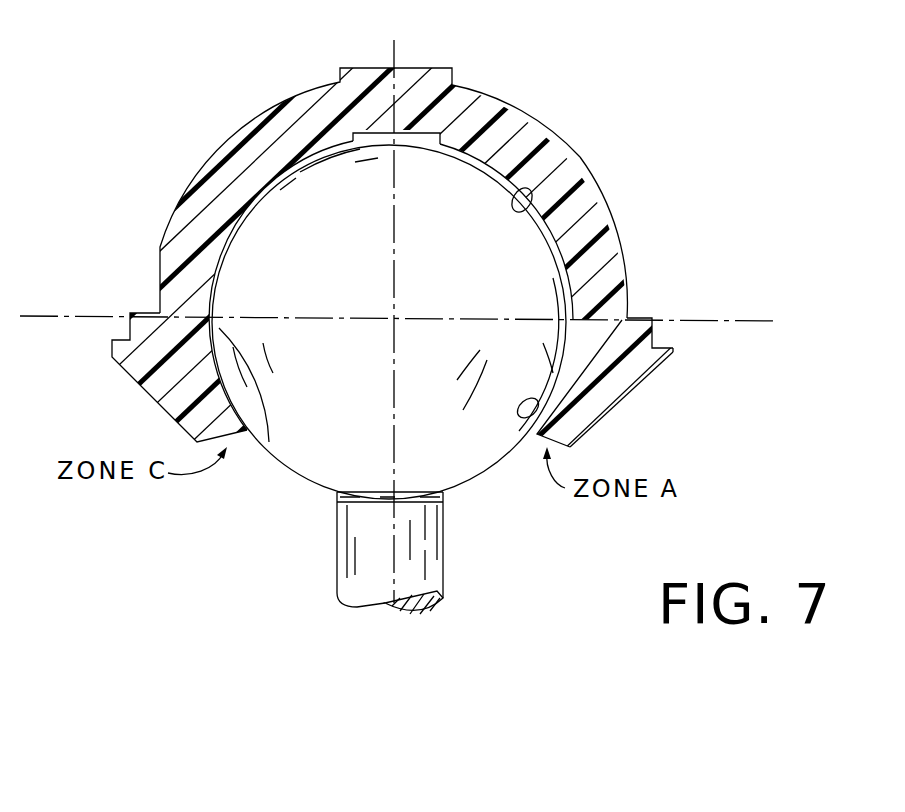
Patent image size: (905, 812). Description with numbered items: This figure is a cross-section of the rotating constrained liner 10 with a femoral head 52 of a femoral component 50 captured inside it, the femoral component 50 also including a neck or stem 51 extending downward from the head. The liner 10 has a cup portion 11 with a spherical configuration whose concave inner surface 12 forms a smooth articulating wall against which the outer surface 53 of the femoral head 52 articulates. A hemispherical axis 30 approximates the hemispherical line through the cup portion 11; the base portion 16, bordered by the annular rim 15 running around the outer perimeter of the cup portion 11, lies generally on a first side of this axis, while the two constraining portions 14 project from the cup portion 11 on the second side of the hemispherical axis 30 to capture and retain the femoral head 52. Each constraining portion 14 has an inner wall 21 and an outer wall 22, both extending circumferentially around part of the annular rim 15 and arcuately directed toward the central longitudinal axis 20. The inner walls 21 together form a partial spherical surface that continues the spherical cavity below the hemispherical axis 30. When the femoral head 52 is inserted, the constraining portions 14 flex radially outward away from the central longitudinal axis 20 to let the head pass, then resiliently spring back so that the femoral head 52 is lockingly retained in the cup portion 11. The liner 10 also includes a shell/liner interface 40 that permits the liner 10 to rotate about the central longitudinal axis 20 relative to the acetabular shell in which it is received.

The rotating constrained liner 10 is at (421, 406).
The cup portion 11 is at (593, 193).
The inner surface 12 is at (570, 158).
The constraining portions 14 is at (153, 390).
The annular rim 15 is at (672, 357).
The base portion 16 is at (636, 248).
The central longitudinal axis 20 is at (397, 50).
The inner wall 21 is at (517, 424).
The outer wall 22 is at (597, 428).
The hemispherical axis 30 is at (756, 320).
The shell/liner interface 40 is at (648, 306).
The femoral component 50 is at (389, 379).
The stud shank 51 is at (347, 557).
The femoral head 52 is at (457, 465).
The outer surface 53 is at (530, 120).